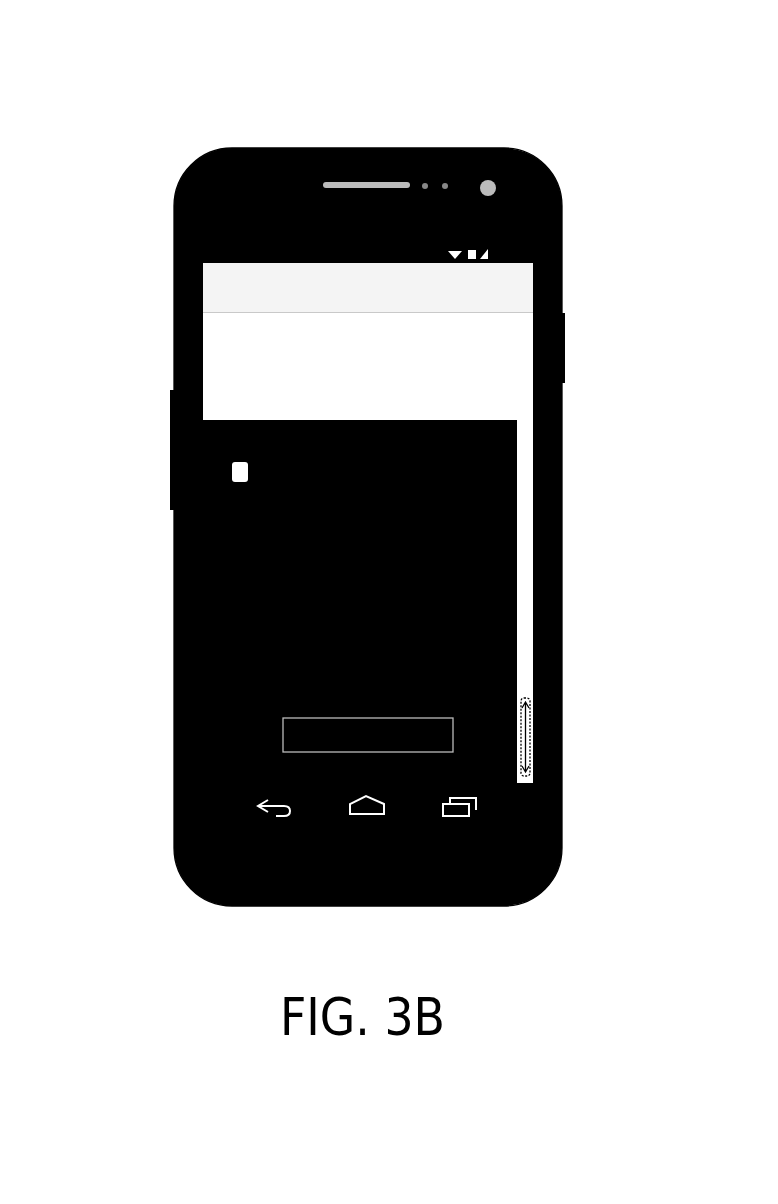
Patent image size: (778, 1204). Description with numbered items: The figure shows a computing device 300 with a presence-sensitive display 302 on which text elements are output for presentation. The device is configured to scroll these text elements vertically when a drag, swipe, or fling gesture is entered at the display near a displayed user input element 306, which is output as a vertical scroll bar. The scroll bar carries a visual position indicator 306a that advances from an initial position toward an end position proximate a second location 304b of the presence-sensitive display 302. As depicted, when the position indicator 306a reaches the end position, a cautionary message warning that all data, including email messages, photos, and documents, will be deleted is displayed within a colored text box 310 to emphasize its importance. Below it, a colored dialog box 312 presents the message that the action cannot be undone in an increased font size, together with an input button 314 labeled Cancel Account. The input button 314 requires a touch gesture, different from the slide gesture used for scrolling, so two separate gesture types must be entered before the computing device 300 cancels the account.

The computing device 300 is at (386, 49).
The presence-sensitive display 302 is at (205, 352).
The second location 304b is at (549, 781).
The user input element 306 is at (522, 390).
The visual position indicator 306a is at (532, 702).
The colored text box 310 is at (520, 540).
The colored dialog box 312 is at (515, 643).
The input button 314 is at (295, 737).